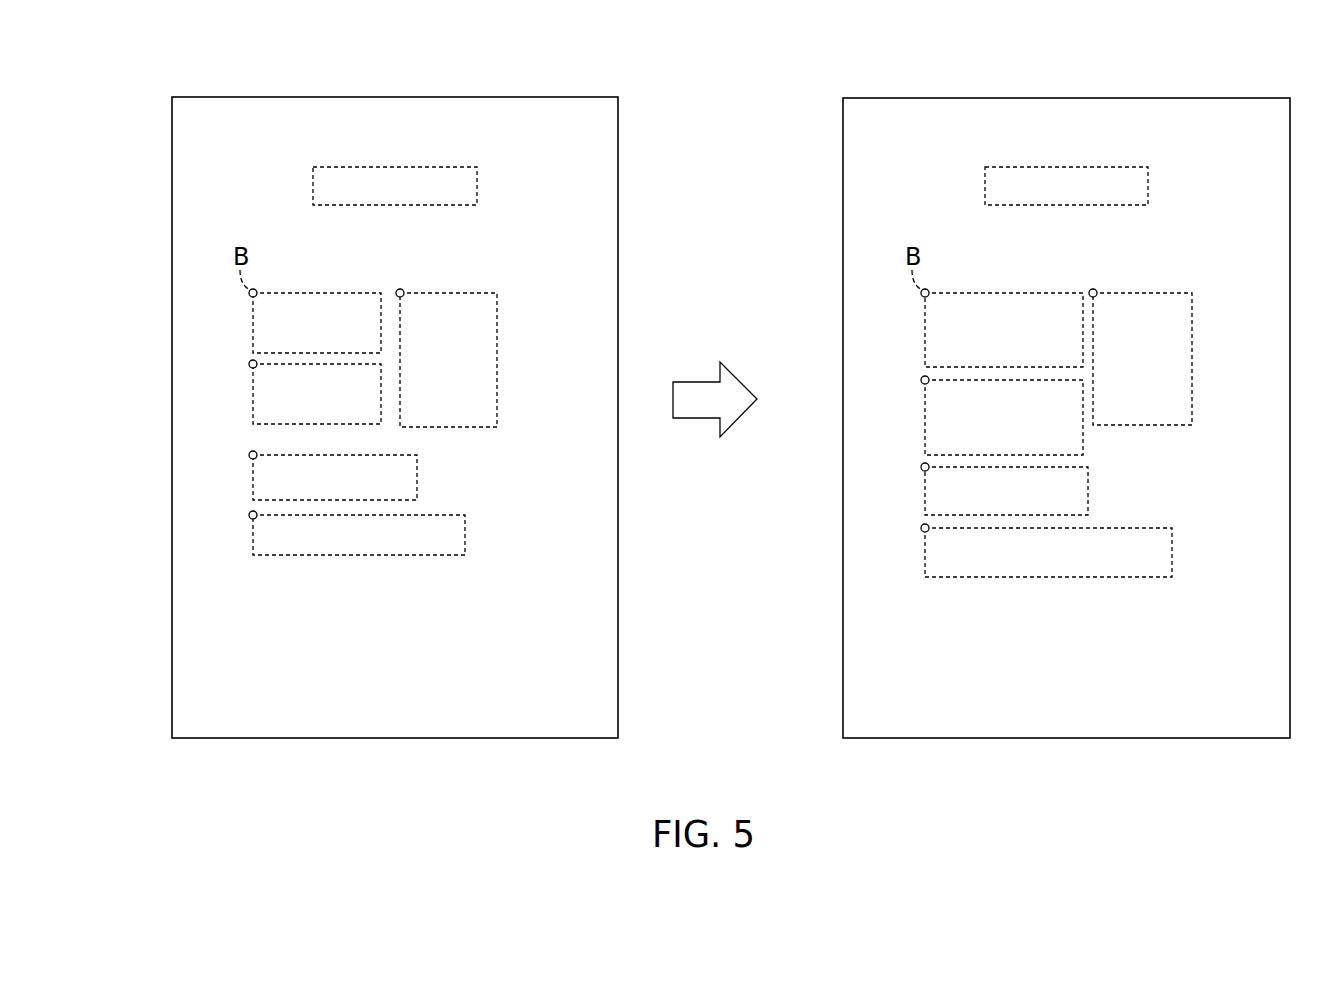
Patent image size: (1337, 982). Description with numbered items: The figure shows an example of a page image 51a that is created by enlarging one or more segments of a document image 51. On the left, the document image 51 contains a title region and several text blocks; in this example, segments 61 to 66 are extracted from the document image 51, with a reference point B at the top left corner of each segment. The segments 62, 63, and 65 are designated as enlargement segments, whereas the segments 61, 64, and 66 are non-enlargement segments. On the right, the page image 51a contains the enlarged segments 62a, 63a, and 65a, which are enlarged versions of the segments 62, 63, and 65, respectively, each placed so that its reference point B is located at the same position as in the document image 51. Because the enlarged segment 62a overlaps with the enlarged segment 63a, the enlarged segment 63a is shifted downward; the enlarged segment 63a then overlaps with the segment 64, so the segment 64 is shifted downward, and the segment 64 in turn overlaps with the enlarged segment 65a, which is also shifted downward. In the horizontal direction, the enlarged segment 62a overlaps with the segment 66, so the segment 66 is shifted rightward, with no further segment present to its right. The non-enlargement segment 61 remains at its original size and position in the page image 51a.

The document image 51 is at (512, 96).
The page image 51a is at (1183, 97).
The segment 61 is at (308, 190).
The segment 62 is at (253, 322).
The enlarged segment 62a is at (925, 333).
The segment 63 is at (253, 392).
The enlarged segment 63a is at (925, 420).
The segment 64 is at (253, 478).
The segment 65 is at (253, 537).
The enlarged segment 65a is at (925, 551).
The segment 66 is at (497, 355).